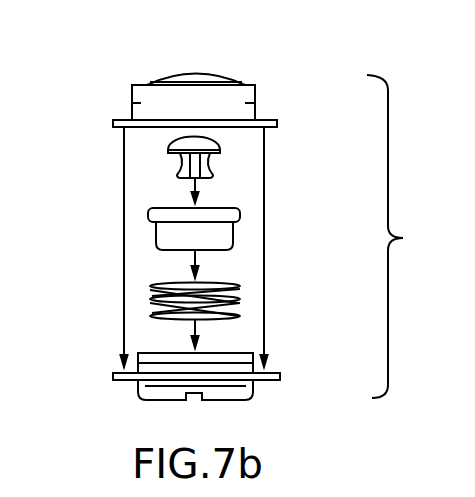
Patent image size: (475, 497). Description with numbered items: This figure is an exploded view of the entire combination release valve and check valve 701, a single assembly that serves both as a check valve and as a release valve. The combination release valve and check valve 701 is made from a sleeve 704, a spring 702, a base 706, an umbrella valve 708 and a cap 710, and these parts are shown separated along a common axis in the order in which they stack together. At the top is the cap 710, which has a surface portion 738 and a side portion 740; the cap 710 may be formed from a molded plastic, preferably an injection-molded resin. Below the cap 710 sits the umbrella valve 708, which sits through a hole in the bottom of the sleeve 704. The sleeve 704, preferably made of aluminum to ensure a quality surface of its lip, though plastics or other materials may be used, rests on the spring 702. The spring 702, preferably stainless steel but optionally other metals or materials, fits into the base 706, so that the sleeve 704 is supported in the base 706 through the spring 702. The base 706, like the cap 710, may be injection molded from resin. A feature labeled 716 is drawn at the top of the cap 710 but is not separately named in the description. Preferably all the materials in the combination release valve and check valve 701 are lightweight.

The combination release valve and check valve 701 is at (285, 237).
The spring 702 is at (240, 282).
The sleeve 704 is at (228, 211).
The base 706 is at (245, 358).
The umbrella valve 708 is at (203, 142).
The cap 710 is at (257, 105).
The dome cover 716 is at (197, 77).
The surface portion 738 is at (148, 82).
The side portion 740 is at (131, 103).